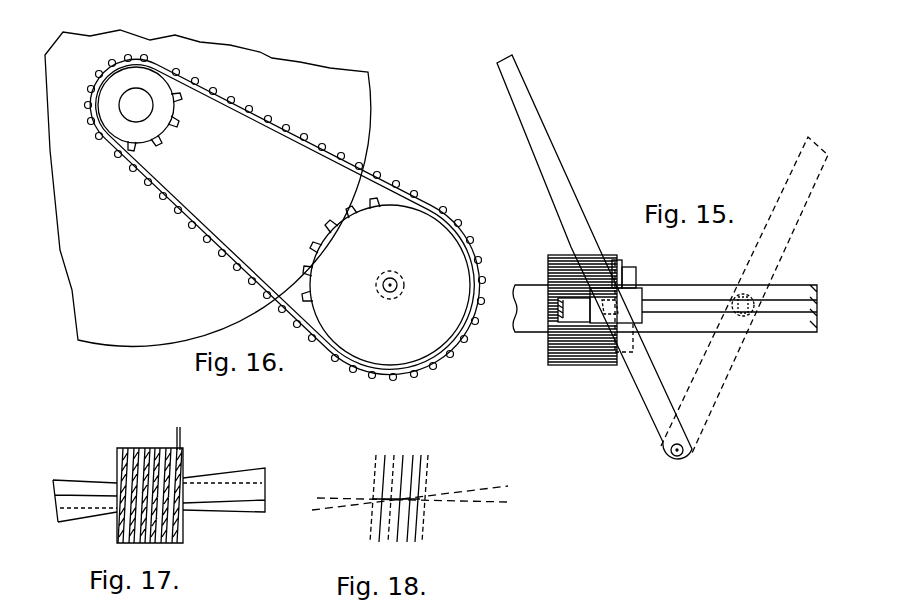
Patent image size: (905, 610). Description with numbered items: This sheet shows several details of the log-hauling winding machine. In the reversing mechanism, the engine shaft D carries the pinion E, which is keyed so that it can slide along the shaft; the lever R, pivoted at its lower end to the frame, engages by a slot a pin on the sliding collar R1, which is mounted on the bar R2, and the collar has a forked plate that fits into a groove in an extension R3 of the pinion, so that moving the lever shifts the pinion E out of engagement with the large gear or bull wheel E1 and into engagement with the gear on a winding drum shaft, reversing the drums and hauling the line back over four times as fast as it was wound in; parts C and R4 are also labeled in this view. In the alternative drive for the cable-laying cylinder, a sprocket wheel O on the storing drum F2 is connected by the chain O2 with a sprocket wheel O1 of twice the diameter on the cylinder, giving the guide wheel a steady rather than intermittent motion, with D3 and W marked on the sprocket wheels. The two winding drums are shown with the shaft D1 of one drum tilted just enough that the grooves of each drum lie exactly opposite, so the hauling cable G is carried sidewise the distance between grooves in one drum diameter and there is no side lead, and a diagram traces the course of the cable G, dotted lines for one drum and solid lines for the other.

In FIG. 16, the storing drum F2 is at (208, 188).
In FIG. 16, the small sprocket wheel D3 is at (140, 109).
In FIG. 16, the sprocket wheel O is at (154, 123).
In FIG. 16, the large sprocket wheel W is at (386, 281).
In FIG. 16, the sprocket wheel O1 is at (346, 289).
In FIG. 16, the chain O2 is at (280, 128).
In FIG. 16, the bull wheel E1 is at (330, 0).
In FIG. 15, the engine shaft D is at (794, 326).
In FIG. 15, the bar R2 is at (682, 300).
In FIG. 15, the pinion E is at (584, 362).
In FIG. 15, the sliding collar R1 is at (640, 320).
In FIG. 15, the pin C is at (610, 307).
In FIG. 15, the extension of the pinion R3 is at (618, 260).
In FIG. 15, the block R4 is at (636, 273).
In FIG. 15, the lever R is at (662, 257).
In FIG. 17, the winding drum shaft D1 is at (55, 496).
In FIG. 17, the hauling cable G is at (157, 484).